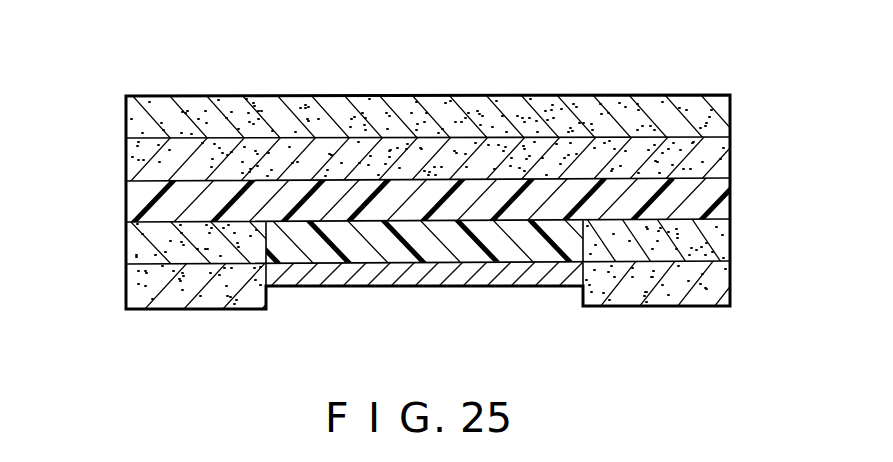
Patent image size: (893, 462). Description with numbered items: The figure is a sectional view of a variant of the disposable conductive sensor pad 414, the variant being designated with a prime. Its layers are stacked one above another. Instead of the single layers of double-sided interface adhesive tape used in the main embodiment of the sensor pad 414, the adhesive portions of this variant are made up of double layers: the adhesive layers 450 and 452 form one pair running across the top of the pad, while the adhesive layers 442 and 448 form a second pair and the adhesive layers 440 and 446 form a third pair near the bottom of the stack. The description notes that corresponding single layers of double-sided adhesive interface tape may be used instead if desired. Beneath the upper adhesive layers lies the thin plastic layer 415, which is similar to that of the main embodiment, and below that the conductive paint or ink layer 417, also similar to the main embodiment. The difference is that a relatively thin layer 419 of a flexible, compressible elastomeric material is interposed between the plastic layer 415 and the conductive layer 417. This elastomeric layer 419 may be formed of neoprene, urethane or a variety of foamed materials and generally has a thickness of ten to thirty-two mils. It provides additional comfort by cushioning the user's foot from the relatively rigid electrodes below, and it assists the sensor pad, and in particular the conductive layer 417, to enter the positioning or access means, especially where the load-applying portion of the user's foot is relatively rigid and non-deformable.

The disposable conductive sensor pad 414 is at (682, 32).
The adhesive layer 452 is at (137, 118).
The adhesive layer 450 is at (137, 158).
The thin plastic layer 415 is at (140, 199).
The adhesive layer 442 is at (137, 242).
The adhesive layer 448 is at (137, 285).
The adhesive layer 440 is at (703, 248).
The adhesive layer 446 is at (697, 295).
The elastomeric layer 419 is at (507, 247).
The conductive paint or ink layer 417 is at (355, 277).